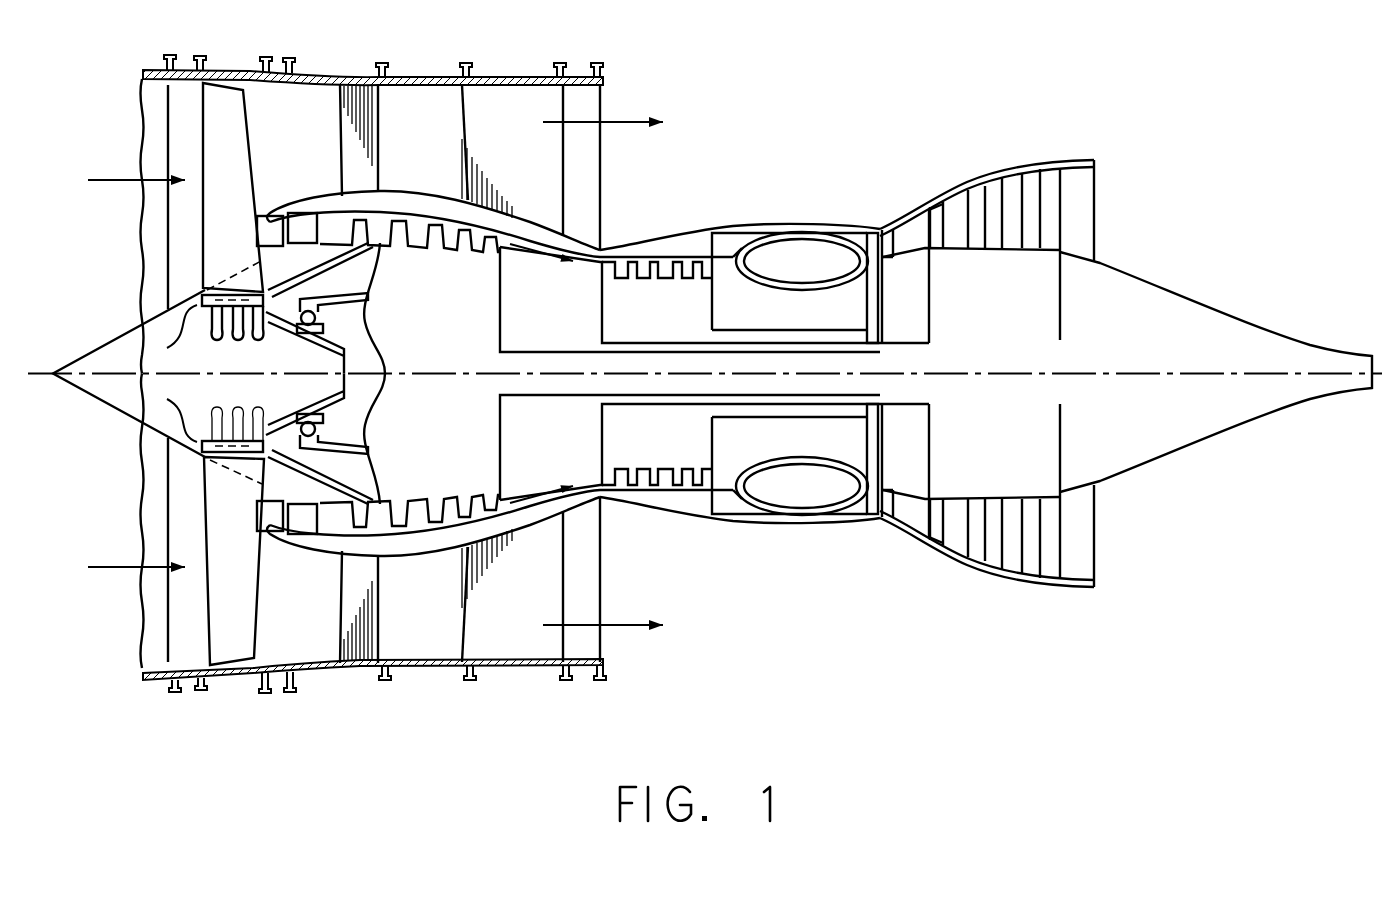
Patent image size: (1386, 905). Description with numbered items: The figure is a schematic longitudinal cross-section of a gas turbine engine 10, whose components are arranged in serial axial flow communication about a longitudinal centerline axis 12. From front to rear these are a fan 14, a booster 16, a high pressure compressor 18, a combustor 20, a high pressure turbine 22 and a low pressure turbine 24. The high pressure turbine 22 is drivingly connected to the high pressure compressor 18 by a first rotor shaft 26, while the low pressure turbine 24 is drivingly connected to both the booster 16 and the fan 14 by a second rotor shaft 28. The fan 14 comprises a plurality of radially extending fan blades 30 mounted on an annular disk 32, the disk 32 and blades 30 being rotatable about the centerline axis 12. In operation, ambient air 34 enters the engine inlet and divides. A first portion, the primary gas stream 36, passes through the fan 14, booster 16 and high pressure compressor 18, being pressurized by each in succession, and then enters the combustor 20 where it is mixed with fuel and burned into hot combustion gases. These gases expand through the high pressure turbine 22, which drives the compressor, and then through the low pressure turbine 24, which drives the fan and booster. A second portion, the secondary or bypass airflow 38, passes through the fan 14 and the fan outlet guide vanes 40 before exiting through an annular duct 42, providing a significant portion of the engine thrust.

The engine 10 is at (748, 193).
The longitudinal centerline axis 12 is at (1120, 370).
The fan 14 is at (261, 101).
The booster 16 is at (362, 228).
The high pressure compressor 18 is at (628, 260).
The combustor 20 is at (800, 497).
The high pressure turbine 22 is at (877, 230).
The low pressure turbine 24 is at (978, 172).
The first rotor shaft 26 is at (866, 302).
The second rotor shaft 28 is at (933, 313).
The fan blades 30 is at (230, 167).
The annular disk 32 is at (129, 373).
The ambient air 34 is at (117, 178).
The primary gas stream 36 is at (527, 252).
The secondary or bypass airflow 38 is at (613, 120).
The fan outlet guide vanes 40 is at (362, 102).
The annular duct 42 is at (585, 163).